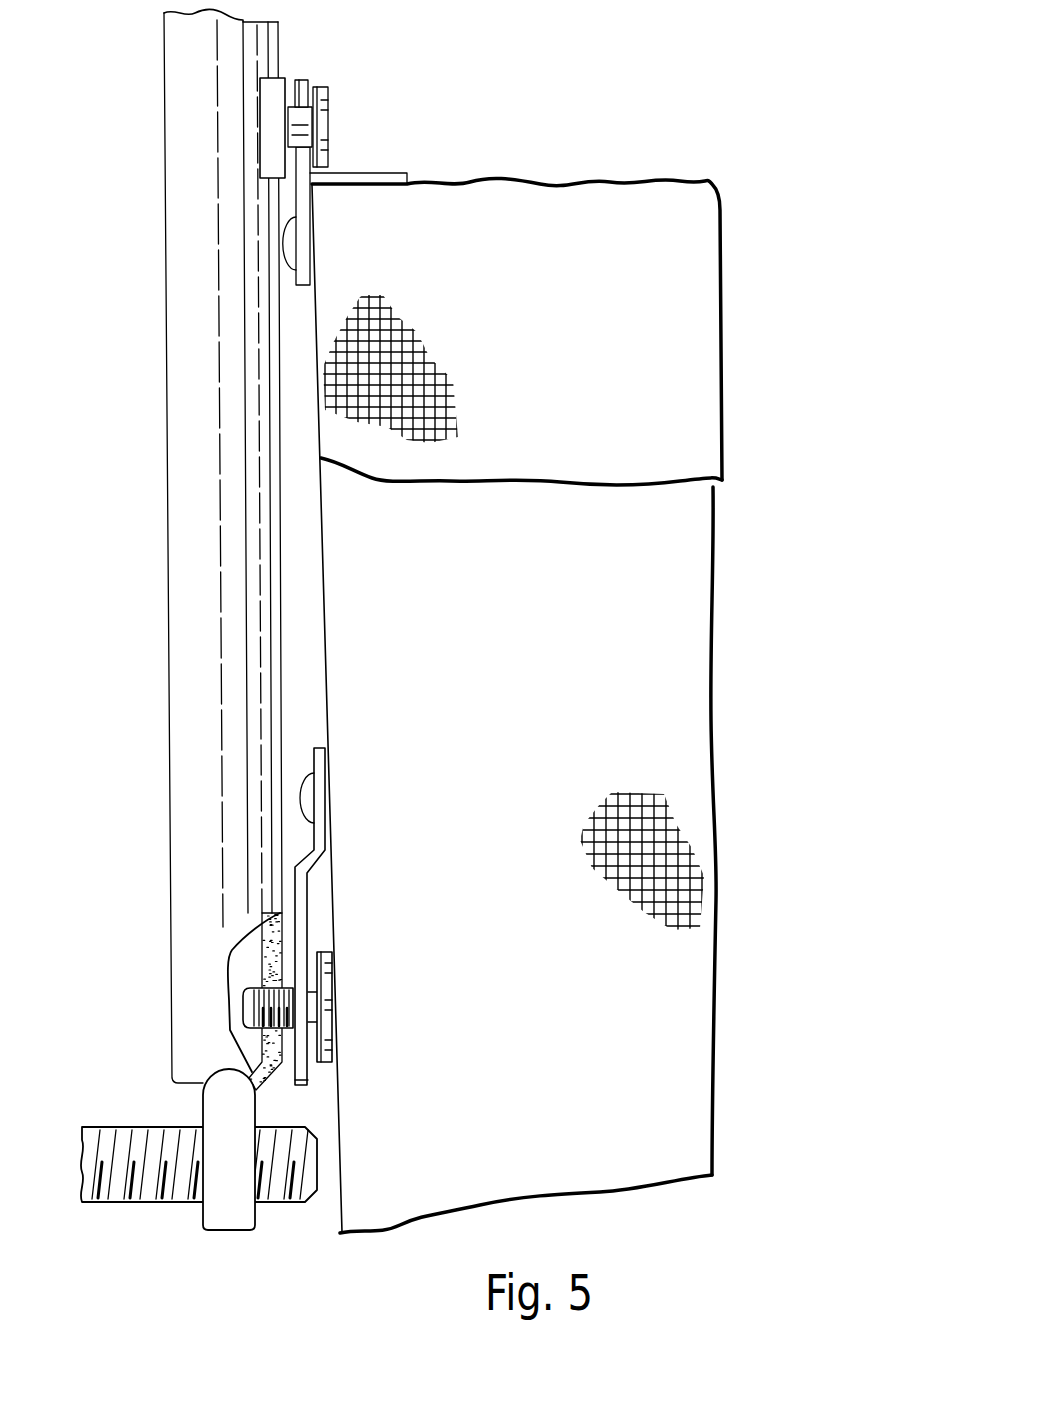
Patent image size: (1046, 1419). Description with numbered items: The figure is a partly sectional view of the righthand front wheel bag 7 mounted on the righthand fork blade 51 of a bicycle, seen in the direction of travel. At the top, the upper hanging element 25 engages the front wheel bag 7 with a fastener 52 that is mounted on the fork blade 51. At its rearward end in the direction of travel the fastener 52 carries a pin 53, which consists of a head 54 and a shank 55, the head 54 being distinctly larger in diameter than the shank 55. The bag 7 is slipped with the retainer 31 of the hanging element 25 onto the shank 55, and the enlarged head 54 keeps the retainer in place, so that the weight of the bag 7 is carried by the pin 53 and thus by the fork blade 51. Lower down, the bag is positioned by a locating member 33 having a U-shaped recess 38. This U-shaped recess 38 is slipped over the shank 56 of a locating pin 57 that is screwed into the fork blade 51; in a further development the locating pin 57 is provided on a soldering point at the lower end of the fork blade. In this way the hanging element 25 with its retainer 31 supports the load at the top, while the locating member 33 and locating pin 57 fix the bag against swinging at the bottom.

The front wheel bag 7 is at (735, 493).
The upper hanging element 25 is at (301, 62).
The retainer 31 is at (300, 93).
The locating member 33 is at (322, 871).
The U-shaped recess 38 is at (305, 1102).
The fork blade 51 is at (188, 739).
The fastener 52 is at (252, 130).
The pin 53 is at (345, 100).
The head 54 is at (320, 119).
The shank 55 is at (303, 128).
The shank 56 is at (330, 1017).
The locating pin 57 is at (348, 993).